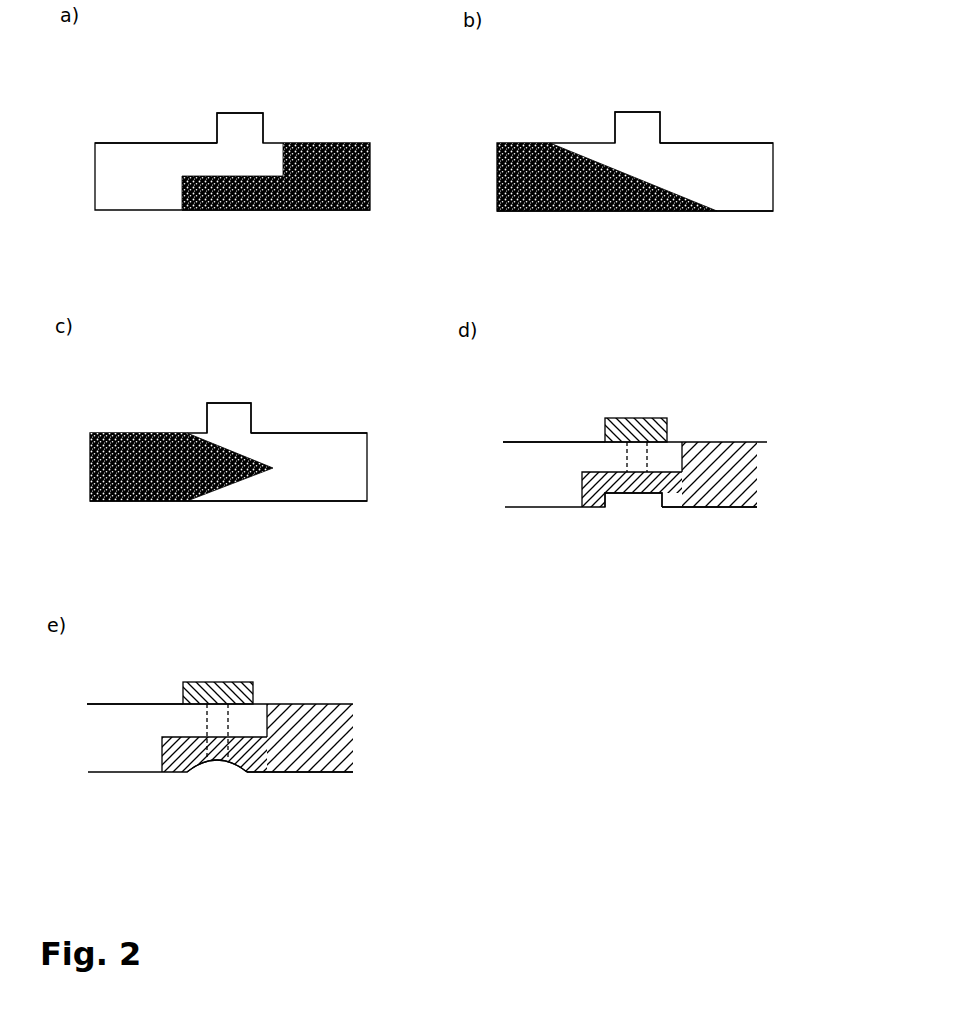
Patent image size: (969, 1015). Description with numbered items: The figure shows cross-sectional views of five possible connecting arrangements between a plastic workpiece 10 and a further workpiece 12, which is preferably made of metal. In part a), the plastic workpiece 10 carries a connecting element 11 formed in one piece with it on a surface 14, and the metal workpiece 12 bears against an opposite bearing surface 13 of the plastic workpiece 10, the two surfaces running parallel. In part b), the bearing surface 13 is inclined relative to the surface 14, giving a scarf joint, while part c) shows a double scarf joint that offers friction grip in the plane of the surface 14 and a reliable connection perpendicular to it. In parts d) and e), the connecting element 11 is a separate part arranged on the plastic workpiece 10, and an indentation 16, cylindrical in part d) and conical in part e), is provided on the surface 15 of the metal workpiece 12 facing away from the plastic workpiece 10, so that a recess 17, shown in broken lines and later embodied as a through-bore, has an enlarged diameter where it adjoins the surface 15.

The plastic workpiece 10 is at (128, 192).
The connecting element 11 is at (242, 127).
The further workpiece 12 is at (338, 143).
The bearing surface 13 is at (233, 180).
The surface 14 is at (173, 140).
The surface 15 is at (307, 212).
The indentation 16 is at (633, 498).
The recess 17 is at (637, 457).